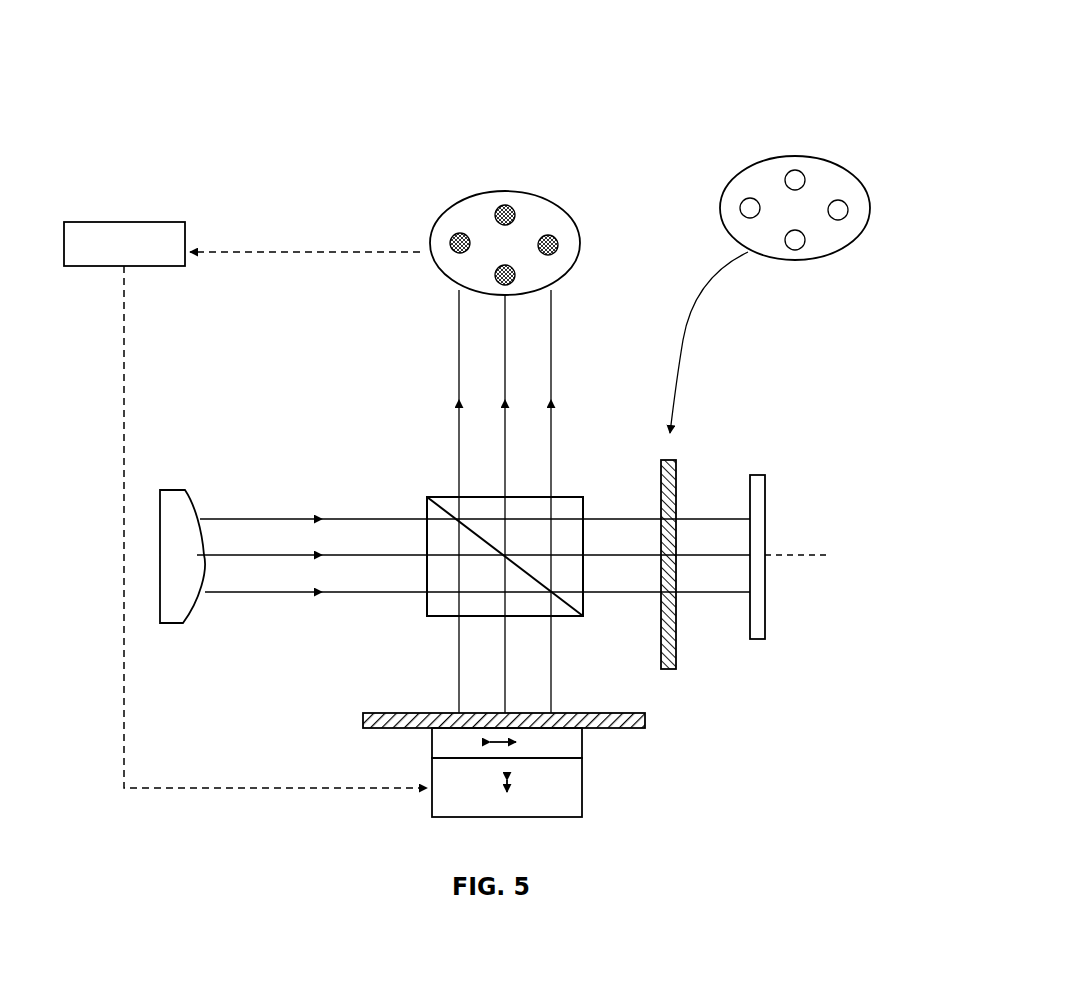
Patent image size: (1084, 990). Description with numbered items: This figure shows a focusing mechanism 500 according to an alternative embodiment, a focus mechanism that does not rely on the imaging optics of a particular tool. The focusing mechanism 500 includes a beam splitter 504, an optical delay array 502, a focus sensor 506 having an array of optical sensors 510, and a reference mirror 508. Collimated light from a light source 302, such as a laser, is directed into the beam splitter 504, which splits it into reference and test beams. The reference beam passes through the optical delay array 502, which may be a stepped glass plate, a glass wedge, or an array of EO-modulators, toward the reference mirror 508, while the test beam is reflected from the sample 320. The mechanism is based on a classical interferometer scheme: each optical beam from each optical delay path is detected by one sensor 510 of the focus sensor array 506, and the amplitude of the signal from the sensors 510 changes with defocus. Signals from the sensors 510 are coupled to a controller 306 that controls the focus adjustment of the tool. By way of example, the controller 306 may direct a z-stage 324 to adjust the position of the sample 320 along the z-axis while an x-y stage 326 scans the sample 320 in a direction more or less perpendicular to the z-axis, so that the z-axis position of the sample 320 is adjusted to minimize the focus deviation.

The focusing mechanism 500 is at (738, 98).
The light source 302 is at (183, 512).
The controller 306 is at (162, 230).
The sample 320 is at (643, 713).
The z-stage 324 is at (575, 748).
The x-y stage 326 is at (565, 805).
The optical delay array 502 is at (838, 172).
The beam splitter 504 is at (558, 503).
The focus sensor 506 is at (554, 202).
The reference mirror 508 is at (760, 498).
The optical sensors 510 is at (500, 206).